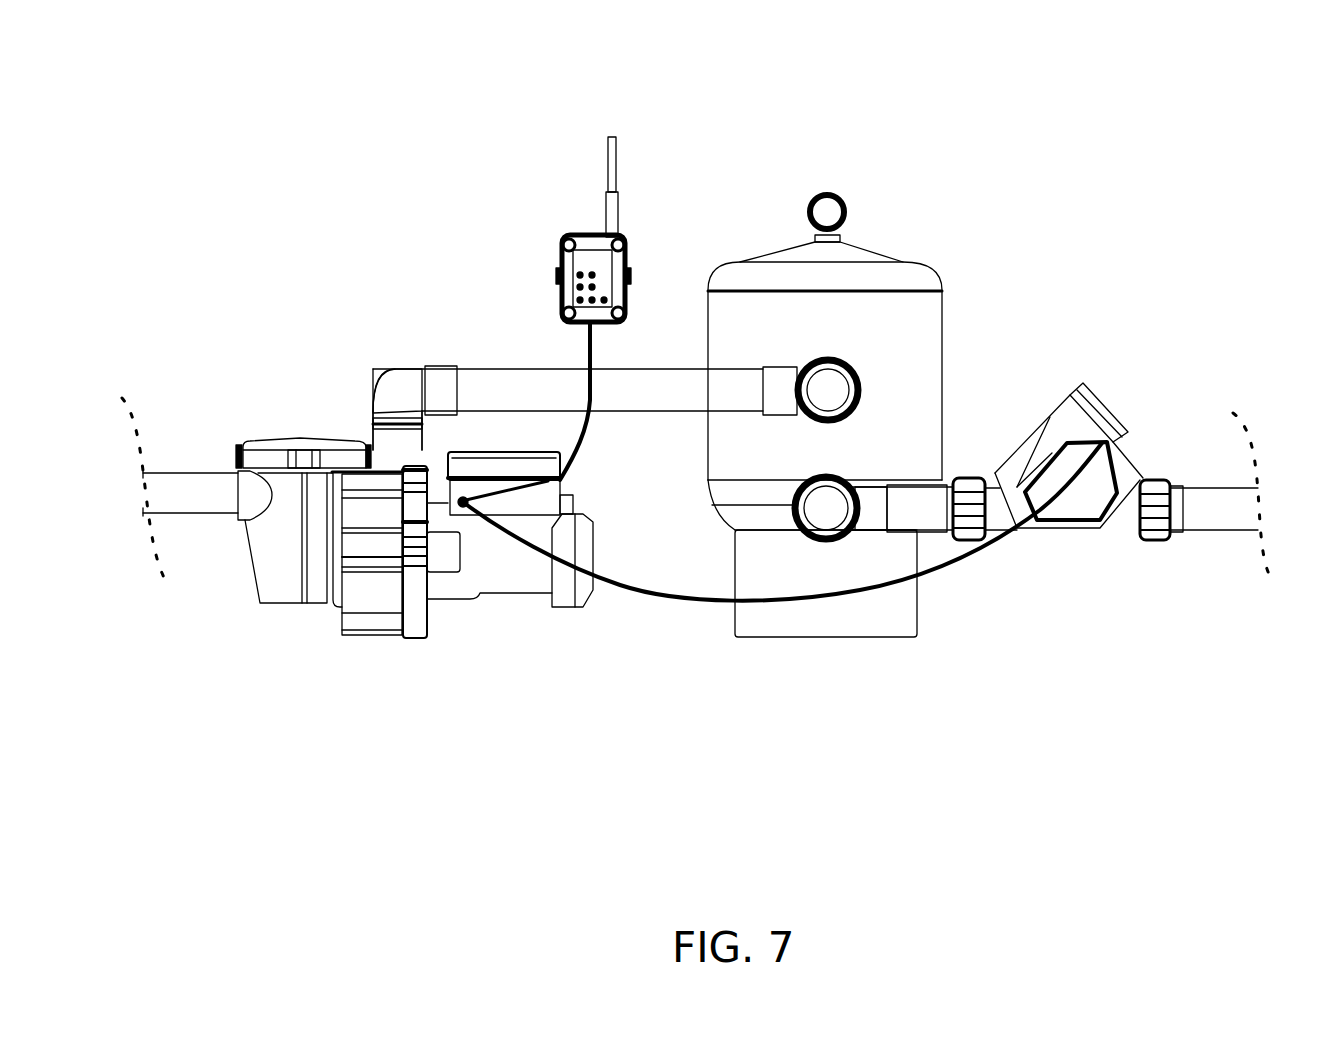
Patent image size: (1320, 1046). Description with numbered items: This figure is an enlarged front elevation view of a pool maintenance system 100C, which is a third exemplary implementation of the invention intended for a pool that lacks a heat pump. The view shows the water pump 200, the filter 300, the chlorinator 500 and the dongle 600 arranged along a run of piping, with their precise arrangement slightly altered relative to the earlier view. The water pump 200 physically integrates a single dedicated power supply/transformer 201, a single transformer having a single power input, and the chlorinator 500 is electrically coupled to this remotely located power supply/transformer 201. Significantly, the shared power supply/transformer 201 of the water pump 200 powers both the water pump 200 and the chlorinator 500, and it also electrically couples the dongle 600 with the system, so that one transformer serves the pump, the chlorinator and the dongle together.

The pool maintenance system 100C is at (506, 76).
The water pump 200 is at (279, 400).
The power supply/transformer 201 is at (483, 434).
The filter 300 is at (891, 220).
The chlorinator 500 is at (1077, 372).
The dongle 600 is at (559, 220).